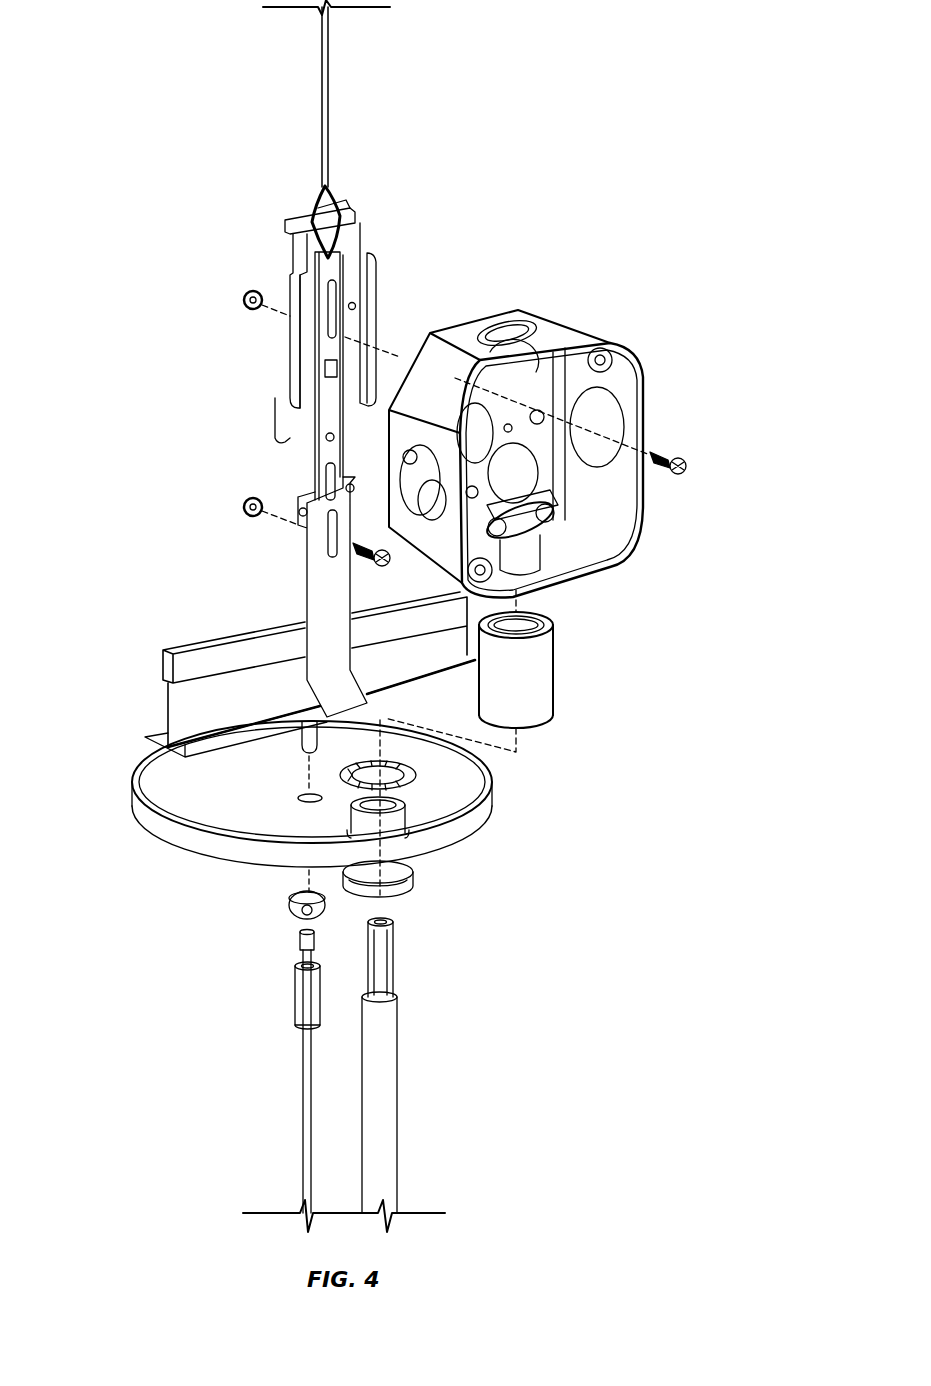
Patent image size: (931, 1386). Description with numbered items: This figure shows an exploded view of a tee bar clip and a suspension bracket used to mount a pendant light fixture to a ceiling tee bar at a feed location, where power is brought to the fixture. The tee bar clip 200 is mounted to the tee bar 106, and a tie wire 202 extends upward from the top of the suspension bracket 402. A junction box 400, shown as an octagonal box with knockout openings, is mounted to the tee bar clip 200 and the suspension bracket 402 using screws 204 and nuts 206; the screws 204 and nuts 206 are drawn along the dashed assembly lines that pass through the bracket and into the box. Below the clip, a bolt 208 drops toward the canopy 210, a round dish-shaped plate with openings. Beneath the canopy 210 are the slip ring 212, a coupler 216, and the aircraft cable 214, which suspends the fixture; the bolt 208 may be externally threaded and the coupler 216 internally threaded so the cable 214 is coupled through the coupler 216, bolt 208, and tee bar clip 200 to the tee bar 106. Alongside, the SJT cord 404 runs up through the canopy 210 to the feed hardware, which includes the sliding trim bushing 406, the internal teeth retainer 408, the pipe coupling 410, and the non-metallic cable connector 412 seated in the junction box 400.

The tee bar 106 is at (373, 665).
The tee bar clip 200 is at (300, 580).
The tie wire 202 is at (325, 88).
The screw 204 is at (680, 455).
The nut 206 is at (240, 302).
The bolt 208 is at (300, 752).
The canopy 210 is at (142, 811).
The slip ring 212 is at (295, 908).
The aircraft cable 214 is at (302, 947).
The coupler 216 is at (305, 1003).
The junction box 400 is at (553, 323).
The suspension bracket 402 is at (362, 232).
The SJT cord 404 is at (390, 1076).
The sliding trim bushing 406 is at (410, 852).
The internal teeth retainer 408 is at (415, 785).
The pipe coupling 410 is at (545, 672).
The non-metallic cable connector 412 is at (520, 548).